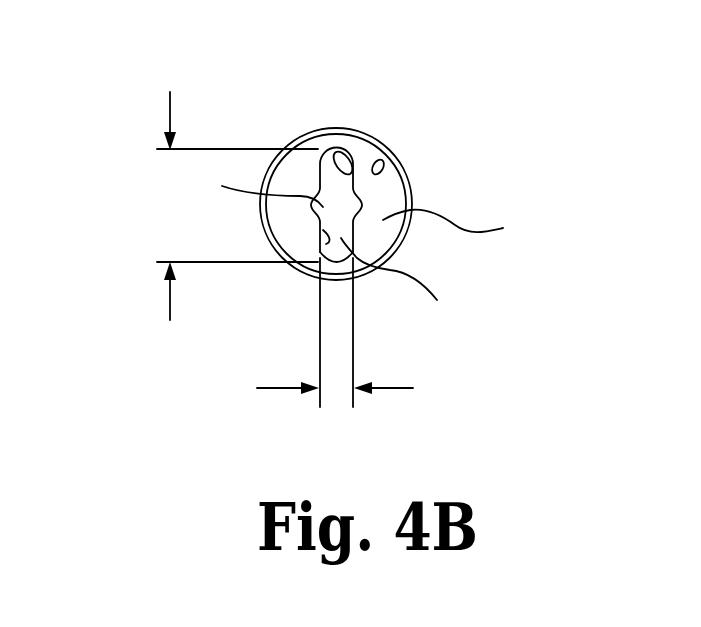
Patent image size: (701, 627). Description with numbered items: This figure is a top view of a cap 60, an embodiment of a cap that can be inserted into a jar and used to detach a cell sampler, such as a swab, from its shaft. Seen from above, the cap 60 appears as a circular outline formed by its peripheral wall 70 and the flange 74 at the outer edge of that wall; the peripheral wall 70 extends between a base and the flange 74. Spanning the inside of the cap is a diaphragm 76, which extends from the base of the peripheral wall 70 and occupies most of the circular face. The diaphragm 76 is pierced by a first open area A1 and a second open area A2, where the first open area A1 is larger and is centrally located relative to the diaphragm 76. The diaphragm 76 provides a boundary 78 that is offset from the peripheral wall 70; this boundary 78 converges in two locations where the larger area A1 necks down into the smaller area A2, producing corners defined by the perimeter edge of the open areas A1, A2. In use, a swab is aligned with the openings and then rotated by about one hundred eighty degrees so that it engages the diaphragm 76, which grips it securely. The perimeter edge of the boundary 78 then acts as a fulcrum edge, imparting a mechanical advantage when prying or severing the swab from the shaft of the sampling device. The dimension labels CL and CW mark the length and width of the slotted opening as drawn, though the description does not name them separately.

The cap 60 is at (490, 125).
The peripheral wall 70 is at (383, 168).
The flange 74 is at (301, 140).
The diaphragm 76 is at (459, 231).
The boundary 78 is at (334, 178).
The first open area A1 is at (251, 188).
The second open area A2 is at (397, 288).
The channel length CL is at (168, 102).
The channel width CW is at (403, 388).